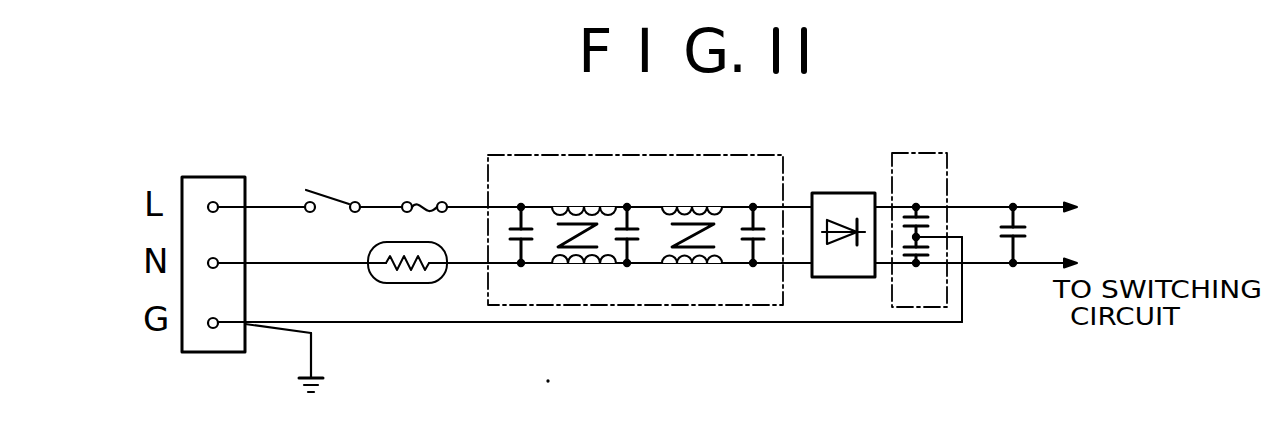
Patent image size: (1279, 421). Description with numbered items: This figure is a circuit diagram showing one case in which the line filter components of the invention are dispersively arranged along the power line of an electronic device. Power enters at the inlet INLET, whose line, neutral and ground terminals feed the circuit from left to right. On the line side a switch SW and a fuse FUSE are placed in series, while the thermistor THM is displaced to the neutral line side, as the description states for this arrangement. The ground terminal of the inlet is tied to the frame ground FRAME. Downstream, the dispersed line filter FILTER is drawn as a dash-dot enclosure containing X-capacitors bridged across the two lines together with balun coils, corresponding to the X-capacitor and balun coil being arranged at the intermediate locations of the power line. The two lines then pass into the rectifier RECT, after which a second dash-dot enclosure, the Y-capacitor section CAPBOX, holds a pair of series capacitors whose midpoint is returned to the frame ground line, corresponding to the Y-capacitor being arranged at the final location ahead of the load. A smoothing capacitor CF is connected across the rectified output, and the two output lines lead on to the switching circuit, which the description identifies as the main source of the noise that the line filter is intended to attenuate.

The AC inlet connector INLET is at (205, 242).
The power switch SW is at (332, 183).
The fuse FUSE is at (425, 183).
The thermistor THM is at (407, 280).
The frame ground FRAME is at (341, 361).
The line filter FILTER is at (635, 230).
The rectifier RECT is at (842, 219).
The capacitor pair CAPBOX is at (919, 230).
The filter capacitor CF is at (1034, 235).